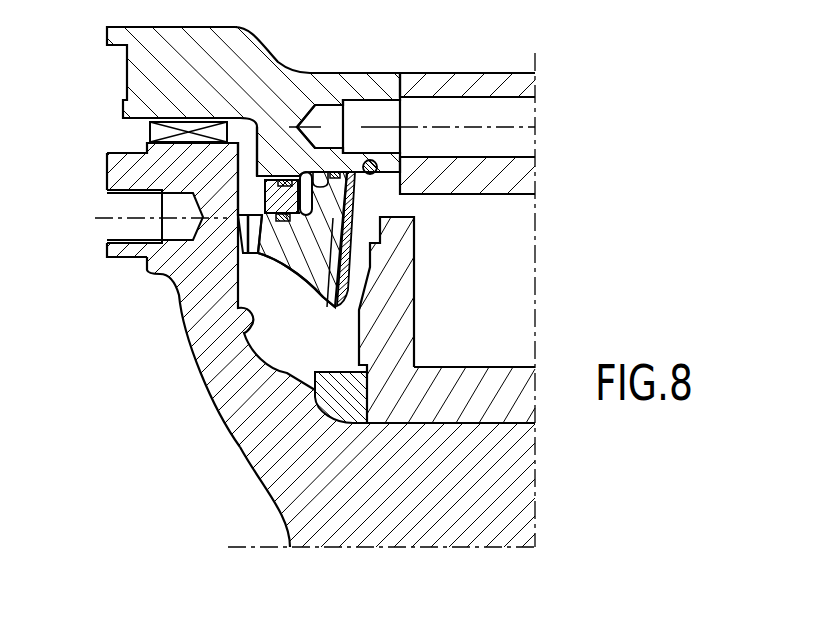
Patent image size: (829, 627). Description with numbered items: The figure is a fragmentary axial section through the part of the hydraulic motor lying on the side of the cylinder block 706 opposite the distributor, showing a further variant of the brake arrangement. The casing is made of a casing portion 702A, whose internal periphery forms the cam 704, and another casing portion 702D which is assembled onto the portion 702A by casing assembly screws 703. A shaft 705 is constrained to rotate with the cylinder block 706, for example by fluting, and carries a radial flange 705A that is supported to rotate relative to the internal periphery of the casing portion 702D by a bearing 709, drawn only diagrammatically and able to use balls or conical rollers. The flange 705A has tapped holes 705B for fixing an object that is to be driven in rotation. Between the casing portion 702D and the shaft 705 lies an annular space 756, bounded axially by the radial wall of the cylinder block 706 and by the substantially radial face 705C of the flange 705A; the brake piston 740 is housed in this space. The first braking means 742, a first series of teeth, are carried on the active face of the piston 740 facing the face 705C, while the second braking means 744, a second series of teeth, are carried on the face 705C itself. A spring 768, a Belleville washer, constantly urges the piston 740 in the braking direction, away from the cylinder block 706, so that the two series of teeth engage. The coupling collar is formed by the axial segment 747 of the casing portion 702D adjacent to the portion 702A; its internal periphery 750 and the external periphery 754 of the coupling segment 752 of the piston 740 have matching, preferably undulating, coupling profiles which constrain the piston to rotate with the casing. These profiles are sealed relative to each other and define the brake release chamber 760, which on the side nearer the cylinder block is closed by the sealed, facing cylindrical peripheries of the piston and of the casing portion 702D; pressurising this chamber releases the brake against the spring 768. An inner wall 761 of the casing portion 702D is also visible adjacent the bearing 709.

The casing portion 702D is at (273, 87).
The casing portion 702A is at (487, 82).
The casing assembly screws 703 is at (385, 117).
The axial segment 747 is at (362, 83).
The internal periphery 750 is at (329, 176).
The cam 704 is at (490, 195).
The bearing 709 is at (150, 131).
The inner wall 761 is at (256, 178).
The shaft 705 is at (418, 521).
The radial flange 705A is at (250, 447).
The tapped holes 705B is at (133, 238).
The radial face 705C is at (197, 340).
The annular space 756 is at (298, 337).
The second braking means 744 is at (243, 212).
The first braking means 742 is at (259, 234).
The coupling segment 752 is at (333, 218).
The brake piston 740 is at (276, 256).
The brake release chamber 760 is at (300, 179).
The spring 768 is at (338, 310).
The external periphery 754 is at (375, 175).
The cylinder block 706 is at (404, 326).